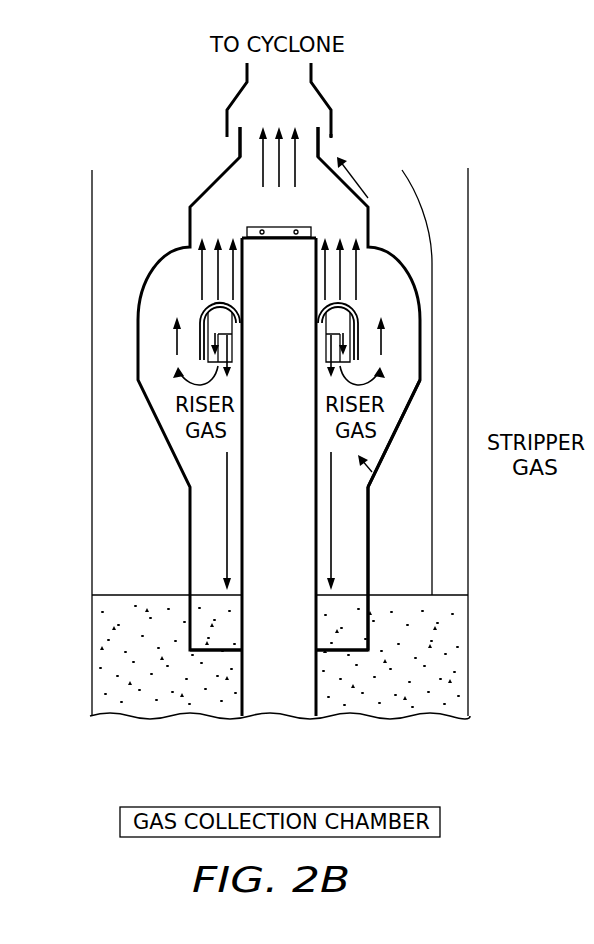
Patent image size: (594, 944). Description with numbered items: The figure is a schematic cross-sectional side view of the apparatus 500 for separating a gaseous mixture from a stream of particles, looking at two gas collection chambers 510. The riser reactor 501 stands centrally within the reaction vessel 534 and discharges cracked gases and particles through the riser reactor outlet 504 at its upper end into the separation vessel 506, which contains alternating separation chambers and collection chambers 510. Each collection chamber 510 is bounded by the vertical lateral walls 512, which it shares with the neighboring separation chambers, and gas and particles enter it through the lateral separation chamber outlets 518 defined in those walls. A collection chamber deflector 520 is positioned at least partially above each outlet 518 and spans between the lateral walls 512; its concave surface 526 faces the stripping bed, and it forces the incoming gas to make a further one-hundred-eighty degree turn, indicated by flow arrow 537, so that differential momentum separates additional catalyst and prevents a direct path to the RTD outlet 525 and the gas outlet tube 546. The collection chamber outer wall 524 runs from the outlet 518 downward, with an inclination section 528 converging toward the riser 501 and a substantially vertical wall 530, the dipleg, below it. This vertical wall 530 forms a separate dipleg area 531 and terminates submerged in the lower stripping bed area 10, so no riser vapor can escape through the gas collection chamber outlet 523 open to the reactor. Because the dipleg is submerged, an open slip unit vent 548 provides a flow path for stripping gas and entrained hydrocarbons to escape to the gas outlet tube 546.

The lower stripping bed area 10 is at (112, 592).
The apparatus 500 is at (462, 112).
The riser reactor 501 is at (241, 527).
The riser reactor outlet 504 is at (238, 147).
The separation vessel 506 is at (144, 286).
The collection chamber 510 is at (374, 481).
The vertical lateral wall 512 is at (161, 367).
The lateral separation chamber outlet 518 is at (222, 322).
The collection chamber deflector 520 is at (215, 305).
The gas collection chamber outlet 523 is at (345, 652).
The collection chamber outer wall 524 is at (426, 366).
The RTD outlet 525 is at (313, 207).
The concave surface 526 is at (313, 336).
The inclination section 528 is at (393, 445).
The substantially vertical wall 530 is at (374, 580).
The collection chamber dipleg area 531 is at (208, 547).
The reaction vessel 534 is at (91, 195).
The flow arrow 537 is at (197, 378).
The gas outlet tube 546 is at (312, 78).
The open slip unit vent 548 is at (331, 137).